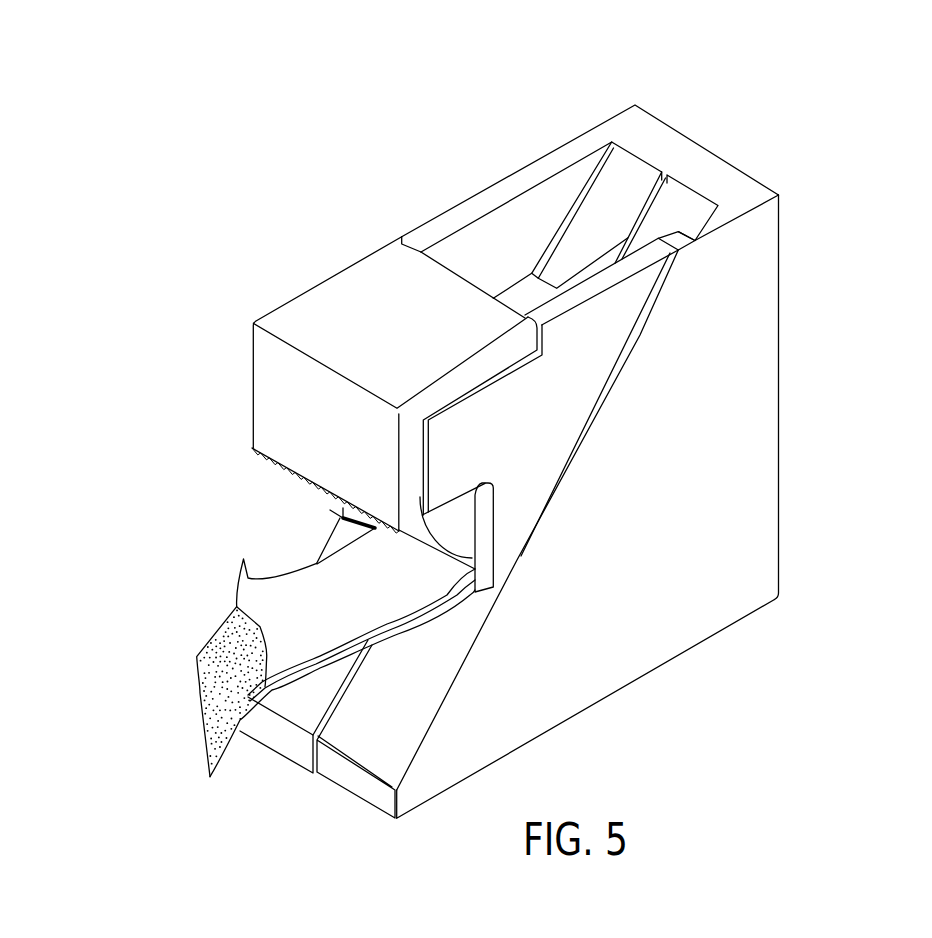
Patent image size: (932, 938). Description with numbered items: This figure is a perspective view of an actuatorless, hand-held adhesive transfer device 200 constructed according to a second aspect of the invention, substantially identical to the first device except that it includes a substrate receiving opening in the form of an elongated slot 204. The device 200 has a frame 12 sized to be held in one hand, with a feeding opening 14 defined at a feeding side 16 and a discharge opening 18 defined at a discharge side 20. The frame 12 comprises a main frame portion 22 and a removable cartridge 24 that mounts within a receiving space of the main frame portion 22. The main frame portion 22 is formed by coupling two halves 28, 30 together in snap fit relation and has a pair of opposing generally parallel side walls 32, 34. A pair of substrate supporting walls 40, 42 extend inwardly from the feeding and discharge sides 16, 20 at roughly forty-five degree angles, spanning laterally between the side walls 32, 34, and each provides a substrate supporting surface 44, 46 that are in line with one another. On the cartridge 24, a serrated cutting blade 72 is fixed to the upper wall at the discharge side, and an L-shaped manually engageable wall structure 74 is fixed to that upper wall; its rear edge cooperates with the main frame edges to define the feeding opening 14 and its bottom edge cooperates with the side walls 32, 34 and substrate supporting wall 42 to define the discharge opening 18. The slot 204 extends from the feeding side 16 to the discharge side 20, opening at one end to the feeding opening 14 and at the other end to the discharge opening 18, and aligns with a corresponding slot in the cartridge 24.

The device 200 is at (268, 113).
The frame 12 is at (838, 278).
The feeding opening 14 is at (512, 215).
The feeding side 16 is at (488, 155).
The discharge opening 18 is at (340, 517).
The discharge side 20 is at (183, 541).
The main frame portion 22 is at (747, 535).
The removable cartridge 24 is at (312, 285).
The half 28 is at (757, 341).
The half 30 is at (457, 212).
The side wall 32 is at (653, 527).
The side wall 34 is at (497, 262).
The substrate supporting wall 40 is at (644, 183).
The substrate supporting wall 42 is at (413, 706).
The substrate supporting surface 44 is at (682, 205).
The substrate supporting surface 46 is at (447, 648).
The serrated cutting blade 72 is at (280, 468).
The L-shaped manually engageable wall structure 74 is at (303, 322).
The elongated slot 204 is at (595, 432).